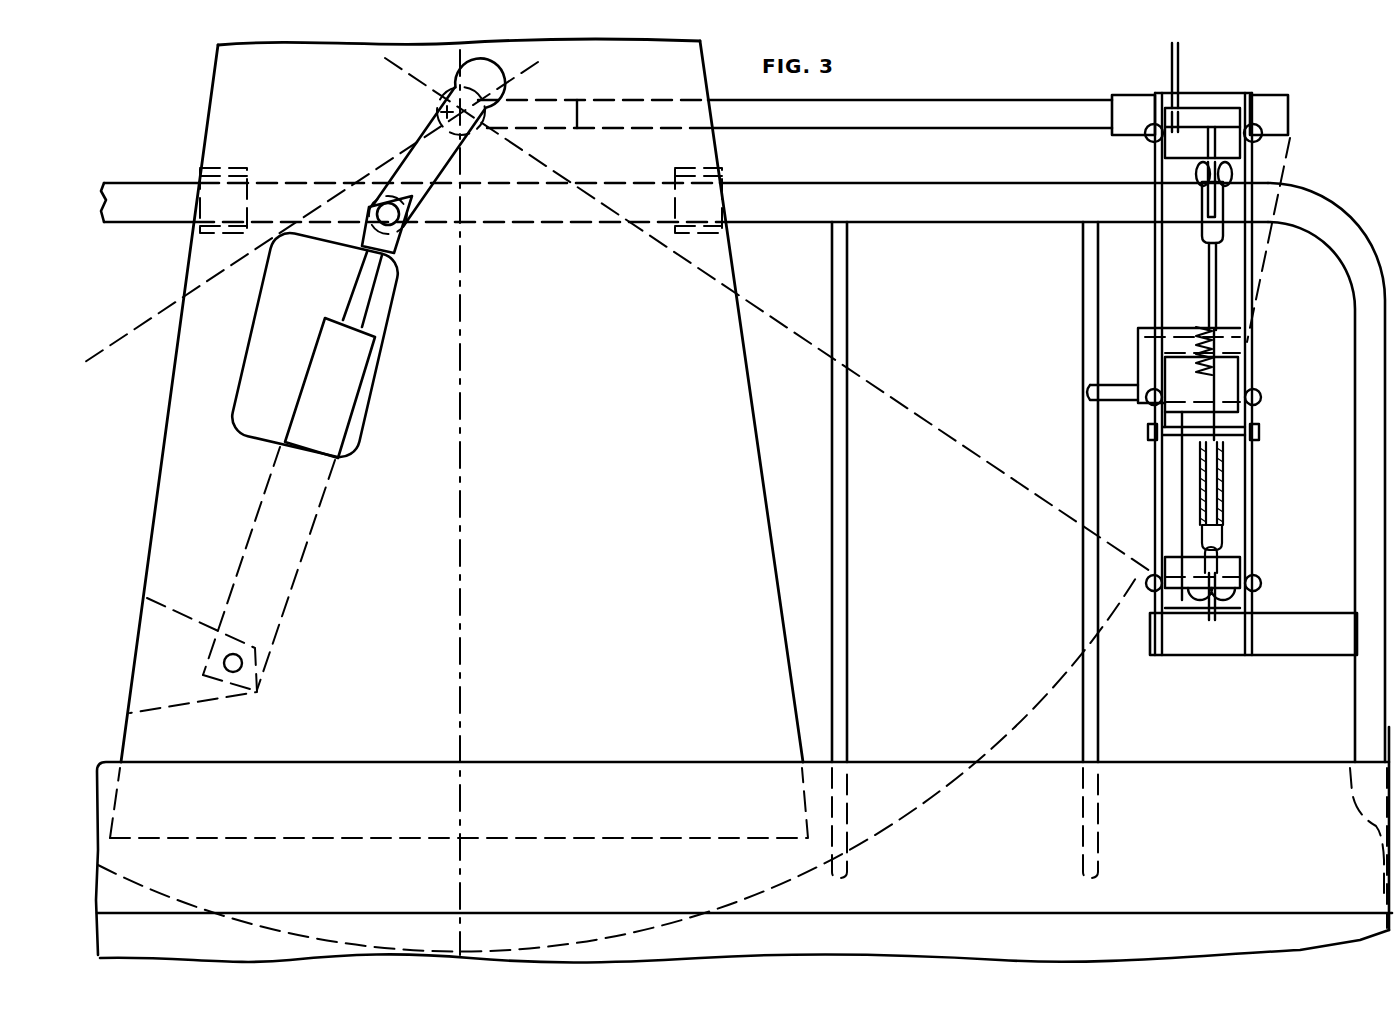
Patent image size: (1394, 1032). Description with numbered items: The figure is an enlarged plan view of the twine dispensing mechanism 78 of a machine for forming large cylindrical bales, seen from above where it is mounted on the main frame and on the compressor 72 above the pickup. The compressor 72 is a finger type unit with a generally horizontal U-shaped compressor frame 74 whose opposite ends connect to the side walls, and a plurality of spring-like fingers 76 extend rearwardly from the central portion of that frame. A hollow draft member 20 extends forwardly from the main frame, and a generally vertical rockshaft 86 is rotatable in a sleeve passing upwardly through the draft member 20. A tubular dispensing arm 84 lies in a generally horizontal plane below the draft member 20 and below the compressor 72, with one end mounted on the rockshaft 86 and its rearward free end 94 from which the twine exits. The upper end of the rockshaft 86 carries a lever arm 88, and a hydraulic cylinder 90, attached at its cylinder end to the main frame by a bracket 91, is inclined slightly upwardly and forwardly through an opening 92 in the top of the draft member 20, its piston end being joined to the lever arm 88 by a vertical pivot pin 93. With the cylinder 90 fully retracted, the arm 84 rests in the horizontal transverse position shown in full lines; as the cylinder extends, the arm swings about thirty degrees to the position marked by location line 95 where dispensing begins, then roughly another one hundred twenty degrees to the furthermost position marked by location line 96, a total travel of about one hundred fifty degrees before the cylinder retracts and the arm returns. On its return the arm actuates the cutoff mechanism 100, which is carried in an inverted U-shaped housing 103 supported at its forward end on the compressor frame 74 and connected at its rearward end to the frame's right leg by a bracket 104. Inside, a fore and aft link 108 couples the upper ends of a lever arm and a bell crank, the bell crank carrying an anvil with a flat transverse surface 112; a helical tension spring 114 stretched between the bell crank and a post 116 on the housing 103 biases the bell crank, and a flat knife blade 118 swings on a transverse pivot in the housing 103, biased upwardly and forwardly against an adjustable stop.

The draft member 20 is at (617, 588).
The compressor 72 is at (1349, 186).
The compressor frame 74 is at (947, 213).
The fingers 76 is at (848, 576).
The twine dispensing mechanism 78 is at (968, 94).
The dispensing arm 84 is at (1050, 108).
The rockshaft 86 is at (440, 112).
The lever arm 88 is at (427, 190).
The hydraulic cylinder 90 is at (318, 375).
The bracket 91 is at (183, 615).
The opening 92 is at (257, 303).
The pivot pin 93 is at (394, 252).
The free end 94 is at (1292, 114).
The location line 95 is at (954, 440).
The location line 96 is at (150, 318).
The cutoff mechanism 100 is at (1222, 379).
The housing 103 is at (1253, 507).
The bracket 104 is at (1297, 645).
The link 108 is at (1212, 290).
The anvil surface 112 is at (1143, 348).
The tension spring 114 is at (1222, 478).
The post 116 is at (1172, 437).
The knife blade 118 is at (1228, 372).